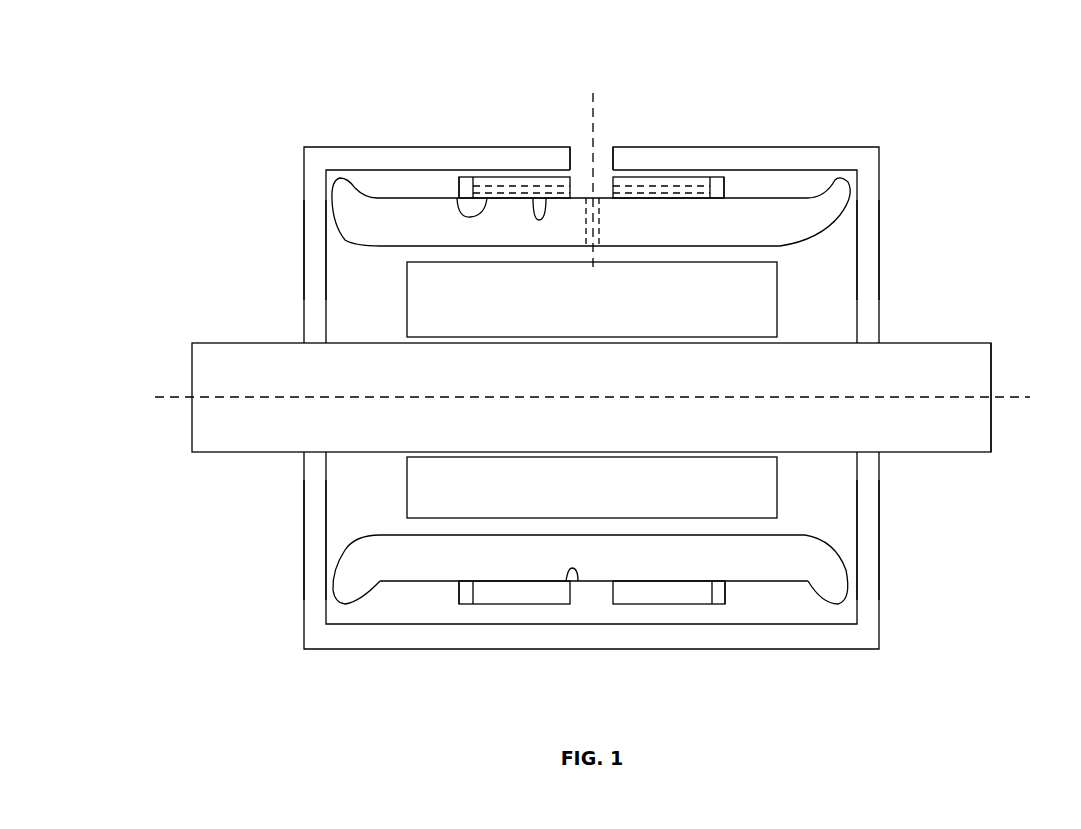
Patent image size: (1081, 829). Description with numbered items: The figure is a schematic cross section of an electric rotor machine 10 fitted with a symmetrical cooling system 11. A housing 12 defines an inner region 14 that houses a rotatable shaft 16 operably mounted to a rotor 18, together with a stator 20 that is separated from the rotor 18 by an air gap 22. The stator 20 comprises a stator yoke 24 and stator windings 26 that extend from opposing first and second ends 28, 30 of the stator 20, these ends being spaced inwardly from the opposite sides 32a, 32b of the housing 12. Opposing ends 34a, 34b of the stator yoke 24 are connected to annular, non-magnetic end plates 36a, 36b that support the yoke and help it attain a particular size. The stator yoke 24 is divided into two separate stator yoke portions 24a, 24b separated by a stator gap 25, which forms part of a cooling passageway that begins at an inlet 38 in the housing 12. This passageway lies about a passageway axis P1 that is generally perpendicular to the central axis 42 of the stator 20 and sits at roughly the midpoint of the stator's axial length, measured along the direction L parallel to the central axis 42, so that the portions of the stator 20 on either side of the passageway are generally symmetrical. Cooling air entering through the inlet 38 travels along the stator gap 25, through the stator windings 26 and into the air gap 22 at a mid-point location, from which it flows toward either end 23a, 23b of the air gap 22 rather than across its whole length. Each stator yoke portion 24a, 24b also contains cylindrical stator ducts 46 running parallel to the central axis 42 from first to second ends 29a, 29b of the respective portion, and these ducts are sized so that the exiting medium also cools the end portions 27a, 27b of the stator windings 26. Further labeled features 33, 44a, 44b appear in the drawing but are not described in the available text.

The electric rotor machine 10 is at (906, 122).
The symmetrical cooling system 11 is at (582, 184).
The housing 12 is at (872, 237).
The inner region 14 is at (347, 293).
The rotatable shaft 16 is at (915, 375).
The rotor 18 is at (581, 309).
The stator 20 is at (744, 197).
The air gap 22 is at (430, 255).
The end of the air gap 23a is at (773, 254).
The end of the air gap 23b is at (420, 248).
The stator yoke 24 is at (690, 178).
The stator yoke portion 24a is at (527, 182).
The stator yoke portion 24b is at (691, 178).
The stator gap 25 is at (588, 590).
The stator windings 26 is at (731, 233).
The end portion of the stator windings 27a is at (840, 605).
The end portion of the stator windings 27b is at (397, 583).
The first end of the stator 28 is at (862, 180).
The first end of the stator yoke portion 29a is at (568, 592).
The second end of the stator yoke portion 29b is at (455, 589).
The second end of the stator 30 is at (341, 177).
The side of the housing 32a is at (870, 290).
The side of the housing 32b is at (313, 323).
The sensor 33 is at (563, 198).
The end of the stator yoke 34a is at (707, 182).
The end of the stator yoke 34b is at (489, 186).
The end plate 36a is at (720, 178).
The end plate 36b is at (461, 183).
The inlet 38 is at (605, 158).
The central axis 42 is at (918, 397).
The first contact 44a is at (616, 188).
The second contact 44b is at (483, 228).
The stator ducts 46 is at (458, 205).
The passageway axis P1 is at (593, 112).
The longitudinal direction L is at (1008, 120).